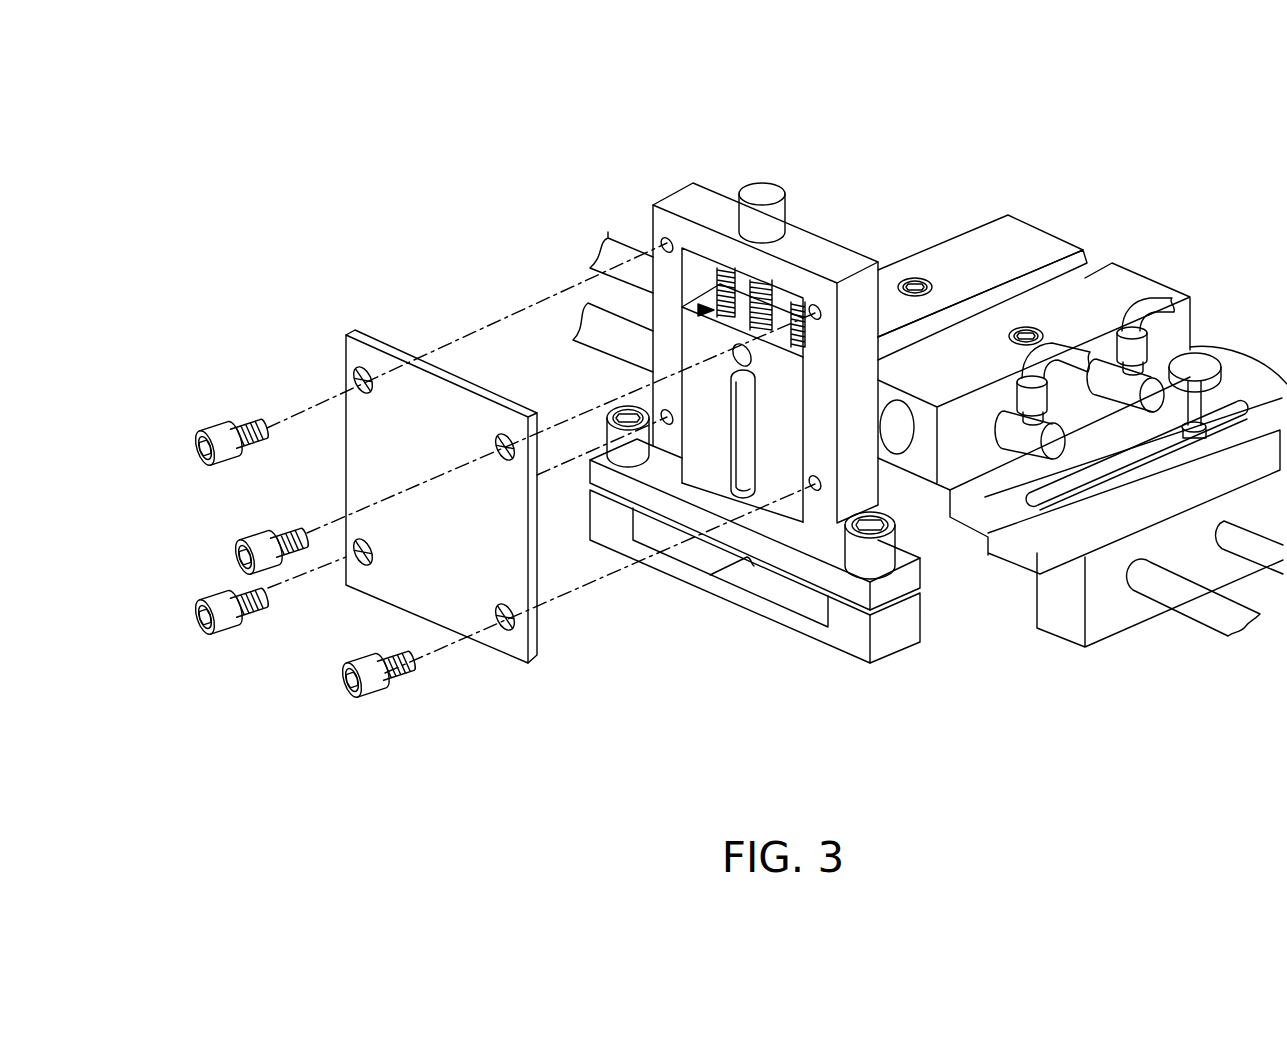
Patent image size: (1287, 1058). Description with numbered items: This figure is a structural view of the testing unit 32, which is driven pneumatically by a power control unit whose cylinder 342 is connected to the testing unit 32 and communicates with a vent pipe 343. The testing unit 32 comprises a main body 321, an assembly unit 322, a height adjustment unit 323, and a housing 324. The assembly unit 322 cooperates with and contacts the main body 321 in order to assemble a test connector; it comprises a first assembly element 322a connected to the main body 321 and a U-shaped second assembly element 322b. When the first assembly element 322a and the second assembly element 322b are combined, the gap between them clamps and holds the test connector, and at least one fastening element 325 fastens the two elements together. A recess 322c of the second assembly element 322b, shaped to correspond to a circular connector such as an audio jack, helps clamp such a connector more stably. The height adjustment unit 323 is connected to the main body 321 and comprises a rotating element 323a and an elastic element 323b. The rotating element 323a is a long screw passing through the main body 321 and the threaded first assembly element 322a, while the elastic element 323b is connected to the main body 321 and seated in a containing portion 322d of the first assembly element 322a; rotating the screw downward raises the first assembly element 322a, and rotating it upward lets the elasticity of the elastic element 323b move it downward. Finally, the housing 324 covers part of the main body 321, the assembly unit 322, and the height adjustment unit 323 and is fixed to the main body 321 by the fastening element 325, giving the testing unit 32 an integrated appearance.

The testing unit 32 is at (940, 162).
The main body 321 is at (658, 215).
The assembly unit 322 is at (745, 519).
The first assembly element 322a is at (692, 350).
The second assembly element 322b is at (843, 640).
The recess 322c is at (717, 585).
The containing portion 322d is at (698, 310).
The height adjustment unit 323 is at (741, 199).
The rotating element 323a is at (763, 187).
The elastic element 323b is at (718, 255).
The housing 324 is at (350, 333).
The fastening element 325 is at (200, 433).
The cylinder 342 is at (1018, 228).
The vent pipe 343 is at (1170, 300).